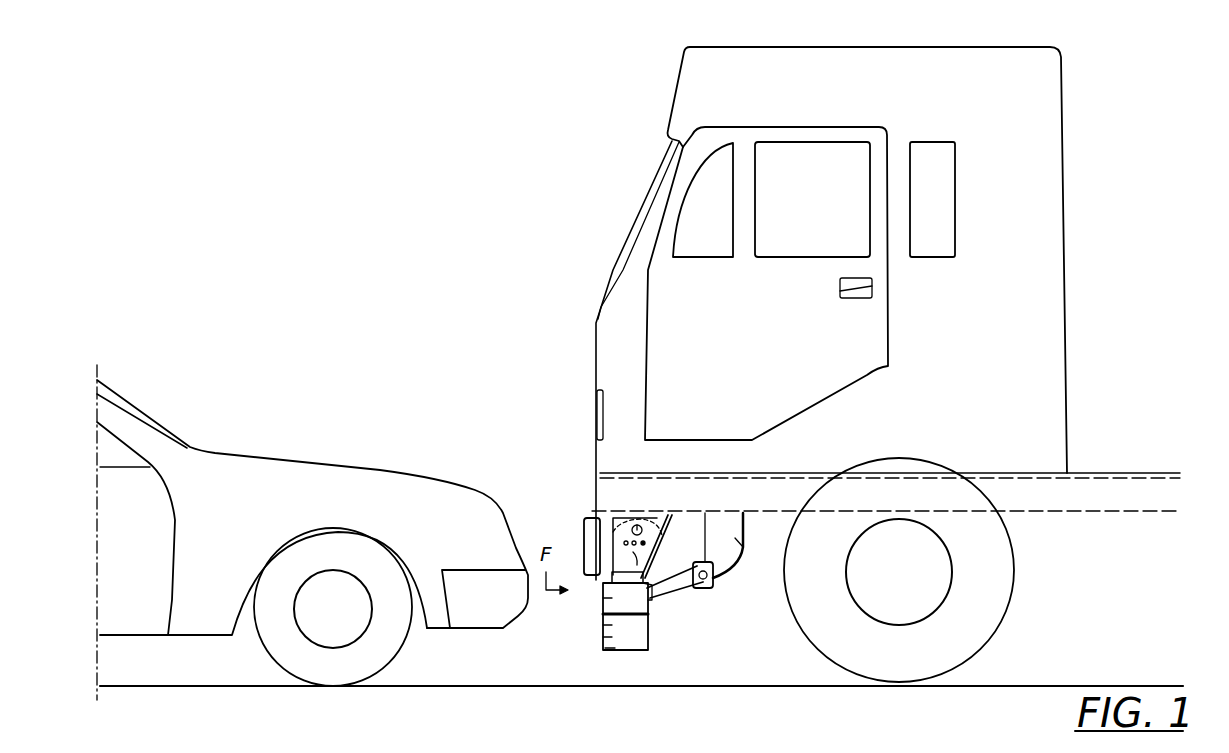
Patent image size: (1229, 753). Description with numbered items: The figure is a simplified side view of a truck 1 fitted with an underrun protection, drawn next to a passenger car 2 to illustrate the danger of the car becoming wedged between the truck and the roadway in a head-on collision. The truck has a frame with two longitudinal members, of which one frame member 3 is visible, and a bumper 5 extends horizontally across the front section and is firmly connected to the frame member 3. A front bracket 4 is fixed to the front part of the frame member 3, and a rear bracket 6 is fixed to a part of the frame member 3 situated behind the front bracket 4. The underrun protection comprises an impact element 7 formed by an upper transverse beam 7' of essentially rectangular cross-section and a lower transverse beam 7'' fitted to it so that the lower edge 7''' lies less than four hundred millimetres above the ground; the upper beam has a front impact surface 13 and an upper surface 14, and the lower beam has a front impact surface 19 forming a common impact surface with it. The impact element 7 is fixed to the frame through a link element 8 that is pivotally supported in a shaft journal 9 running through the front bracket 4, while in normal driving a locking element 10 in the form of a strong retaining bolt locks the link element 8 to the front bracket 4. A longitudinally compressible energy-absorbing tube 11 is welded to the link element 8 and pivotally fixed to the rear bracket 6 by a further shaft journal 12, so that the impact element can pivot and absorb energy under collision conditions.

The truck 1 is at (1043, 119).
The passenger car 2 is at (258, 470).
The frame member 3 is at (1087, 480).
The front bracket 4 is at (628, 545).
The bumper 5 is at (583, 543).
The rear bracket 6 is at (743, 547).
The impact element 7 is at (535, 674).
The upper transverse beam 7' is at (550, 687).
The lower transverse beam 7'' is at (583, 699).
The lower edge 7''' is at (612, 700).
The link element 8 is at (612, 558).
The shaft journal 9 is at (637, 517).
The locking element 10 is at (665, 600).
The energy-absorbing tube 11 is at (680, 590).
The further shaft journal 12 is at (710, 588).
The front impact surface 13 is at (603, 598).
The upper surface 14 is at (652, 590).
The front impact surface 19 is at (603, 637).